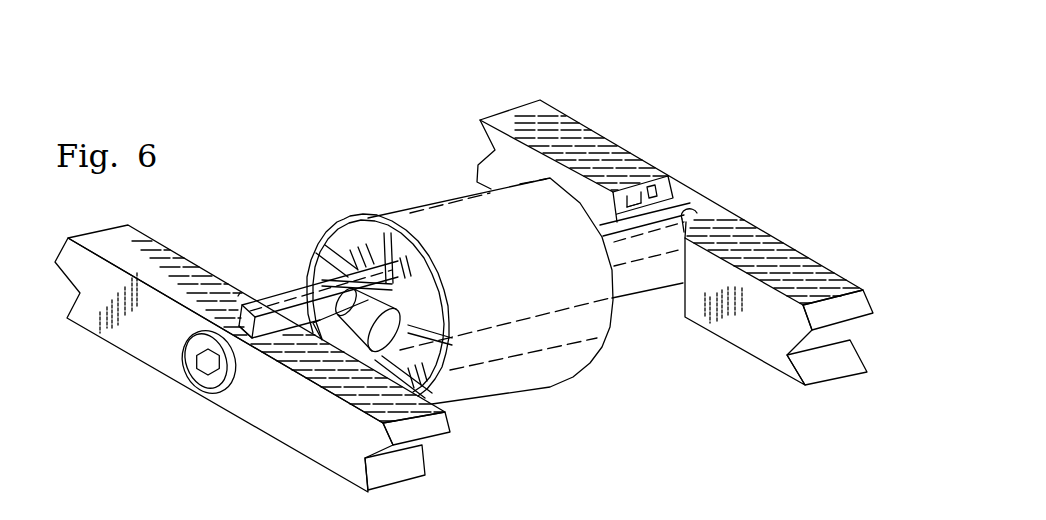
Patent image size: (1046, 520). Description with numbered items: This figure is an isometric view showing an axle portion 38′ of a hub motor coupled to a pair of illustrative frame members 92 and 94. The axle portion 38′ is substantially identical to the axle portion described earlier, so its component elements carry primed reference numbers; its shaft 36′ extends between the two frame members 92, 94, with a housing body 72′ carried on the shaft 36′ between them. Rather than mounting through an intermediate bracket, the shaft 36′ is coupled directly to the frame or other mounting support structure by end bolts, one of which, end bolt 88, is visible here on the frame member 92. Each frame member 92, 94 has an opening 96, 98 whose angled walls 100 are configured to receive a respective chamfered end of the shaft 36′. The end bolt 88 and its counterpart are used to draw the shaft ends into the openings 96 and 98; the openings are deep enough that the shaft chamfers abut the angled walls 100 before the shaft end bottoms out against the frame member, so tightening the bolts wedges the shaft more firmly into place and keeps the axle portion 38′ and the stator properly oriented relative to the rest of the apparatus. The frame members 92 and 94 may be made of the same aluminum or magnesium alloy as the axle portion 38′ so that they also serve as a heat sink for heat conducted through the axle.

The shaft 36′ is at (306, 297).
The axle portion 38′ is at (375, 165).
The cylindrical housing 72′ is at (524, 259).
The end bolt 88 is at (214, 384).
The frame member 92 is at (322, 433).
The frame member 94 is at (789, 327).
The opening 96 is at (254, 292).
The opening 98 is at (654, 189).
The angled walls 100 is at (632, 205).